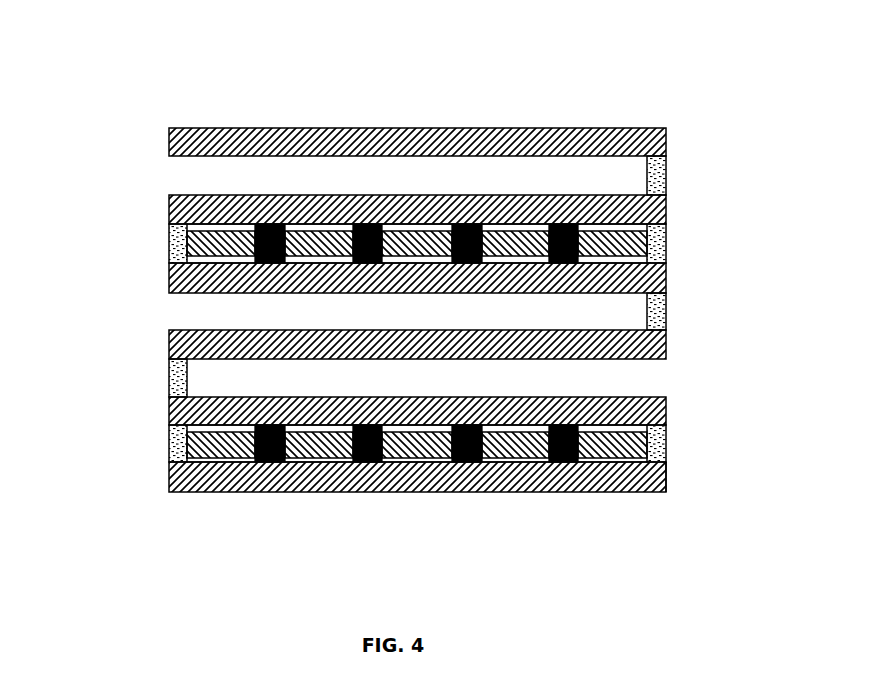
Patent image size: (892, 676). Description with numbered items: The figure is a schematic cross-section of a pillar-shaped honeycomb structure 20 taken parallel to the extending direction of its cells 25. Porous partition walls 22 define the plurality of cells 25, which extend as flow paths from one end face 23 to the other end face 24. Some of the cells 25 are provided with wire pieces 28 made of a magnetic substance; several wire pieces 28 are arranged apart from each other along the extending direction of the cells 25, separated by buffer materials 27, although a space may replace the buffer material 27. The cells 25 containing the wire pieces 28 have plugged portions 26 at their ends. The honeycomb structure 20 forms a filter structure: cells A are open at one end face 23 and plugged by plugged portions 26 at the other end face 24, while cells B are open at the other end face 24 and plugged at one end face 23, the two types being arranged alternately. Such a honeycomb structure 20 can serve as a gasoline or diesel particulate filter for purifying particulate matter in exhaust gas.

The honeycomb structure 20 is at (422, 83).
The porous partition walls 22 is at (626, 140).
The one end face 23 is at (168, 485).
The other end face 24 is at (666, 485).
The cells 25 is at (58, 253).
The plugged portions 26 is at (168, 238).
The buffer materials 27 is at (484, 260).
The wire pieces 28 is at (360, 213).